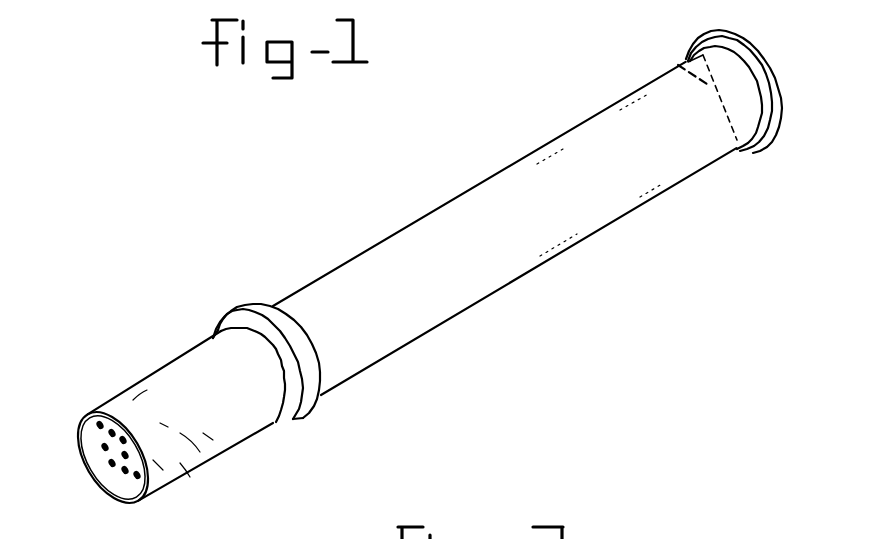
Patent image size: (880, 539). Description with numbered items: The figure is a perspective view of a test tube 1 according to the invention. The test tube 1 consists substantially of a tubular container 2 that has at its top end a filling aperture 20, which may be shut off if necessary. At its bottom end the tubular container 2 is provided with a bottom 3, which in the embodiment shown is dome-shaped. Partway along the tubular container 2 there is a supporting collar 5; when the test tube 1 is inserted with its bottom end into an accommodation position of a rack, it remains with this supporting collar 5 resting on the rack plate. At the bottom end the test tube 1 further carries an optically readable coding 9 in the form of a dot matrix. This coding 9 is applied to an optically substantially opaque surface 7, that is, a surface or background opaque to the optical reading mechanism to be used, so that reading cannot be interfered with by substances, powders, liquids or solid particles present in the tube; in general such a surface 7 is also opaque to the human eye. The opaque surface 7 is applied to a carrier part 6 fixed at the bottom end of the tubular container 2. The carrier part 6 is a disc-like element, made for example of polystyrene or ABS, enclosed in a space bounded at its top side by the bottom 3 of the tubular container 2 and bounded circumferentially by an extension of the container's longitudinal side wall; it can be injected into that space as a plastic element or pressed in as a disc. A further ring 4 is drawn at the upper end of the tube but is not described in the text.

The test tube 1 is at (528, 139).
The tubular container 2 is at (582, 223).
The bottom 3 is at (207, 475).
The end ring 4 is at (773, 133).
The supporting collar 5 is at (313, 410).
The carrier part 6 is at (97, 437).
The optically substantially opaque surface 7 is at (124, 481).
The optically readable coding 9 is at (105, 448).
The filling aperture 20 is at (675, 63).